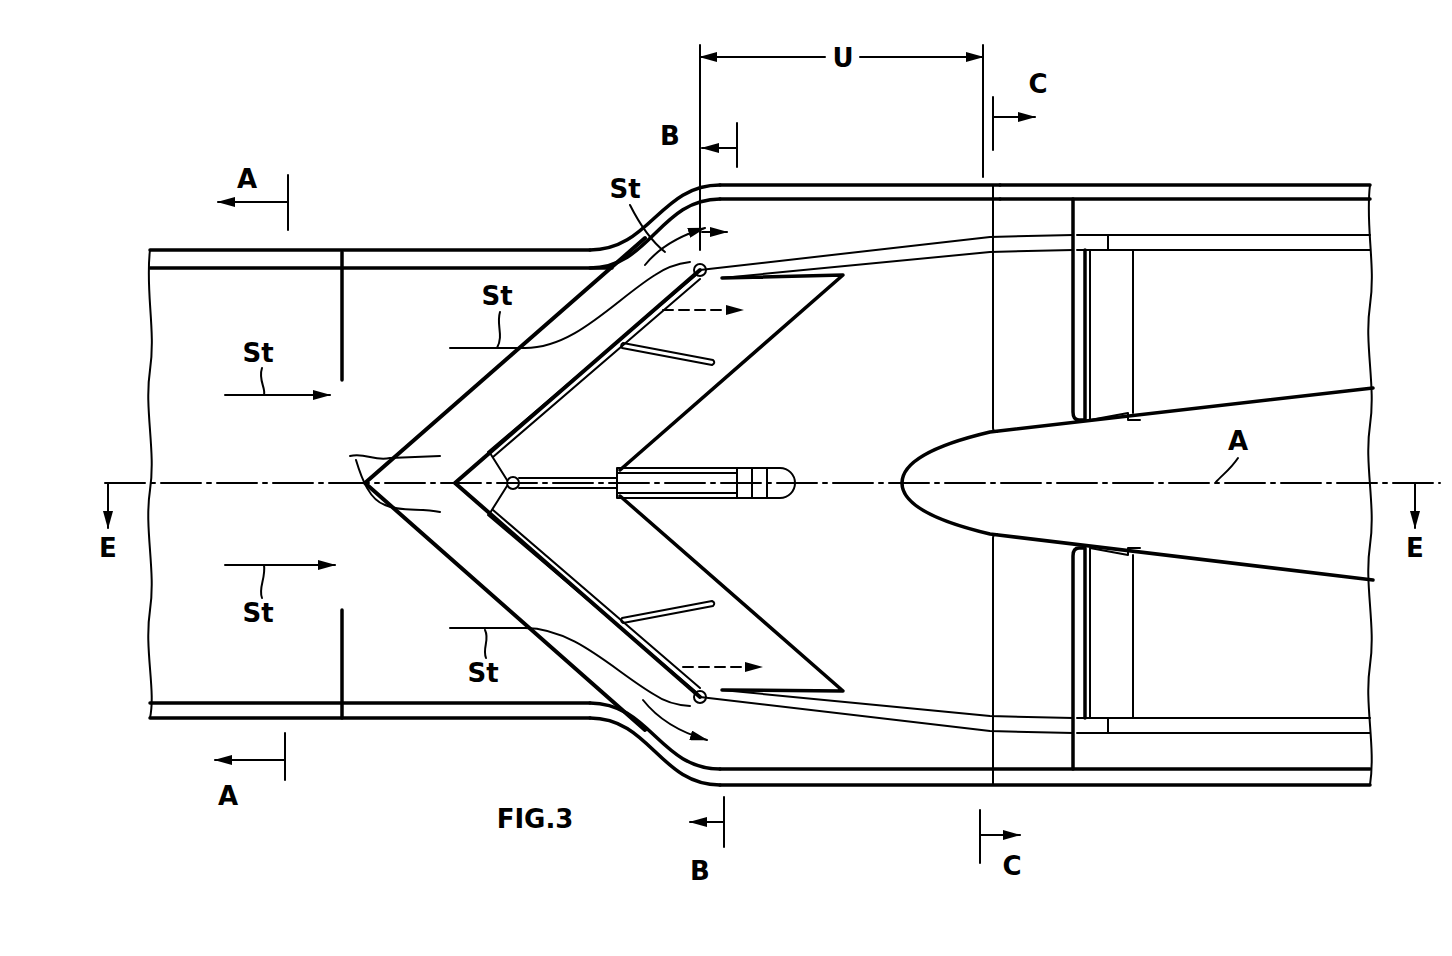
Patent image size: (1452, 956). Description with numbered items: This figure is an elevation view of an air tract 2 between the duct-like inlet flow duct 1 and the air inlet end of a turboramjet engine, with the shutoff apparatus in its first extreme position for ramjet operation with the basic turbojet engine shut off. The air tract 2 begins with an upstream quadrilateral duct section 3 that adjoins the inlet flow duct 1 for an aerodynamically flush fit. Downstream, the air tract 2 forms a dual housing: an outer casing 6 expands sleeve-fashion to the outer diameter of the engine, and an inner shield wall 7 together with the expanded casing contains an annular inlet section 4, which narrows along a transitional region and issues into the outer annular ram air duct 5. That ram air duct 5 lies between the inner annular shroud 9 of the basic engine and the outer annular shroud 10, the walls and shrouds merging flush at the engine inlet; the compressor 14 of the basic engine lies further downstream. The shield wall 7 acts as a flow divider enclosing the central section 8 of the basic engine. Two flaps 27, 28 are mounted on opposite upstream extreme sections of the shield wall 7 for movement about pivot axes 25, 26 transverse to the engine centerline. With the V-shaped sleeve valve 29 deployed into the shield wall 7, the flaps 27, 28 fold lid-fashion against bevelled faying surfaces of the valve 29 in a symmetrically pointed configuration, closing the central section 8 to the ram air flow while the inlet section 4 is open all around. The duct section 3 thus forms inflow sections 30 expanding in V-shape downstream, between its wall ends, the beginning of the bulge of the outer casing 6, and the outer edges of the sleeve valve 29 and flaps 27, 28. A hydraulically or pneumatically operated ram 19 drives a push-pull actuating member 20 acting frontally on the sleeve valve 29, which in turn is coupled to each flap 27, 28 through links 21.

The inlet flow duct 1 is at (222, 536).
The air tract 2 is at (535, 238).
The quadrilateral duct section 3 is at (407, 641).
The annular inlet section 4 is at (840, 238).
The annular ram air duct 5 is at (1223, 231).
The outer casing 6 is at (820, 195).
The shield wall 7 is at (893, 250).
The central section 8 is at (908, 606).
The inner annular shroud 9 is at (1310, 235).
The outer annular shroud 10 is at (1140, 186).
The compressor 14 is at (1263, 690).
The ram 19 is at (770, 460).
The actuating member 20 is at (600, 490).
The link 21 is at (720, 358).
The pivot axis 25 is at (706, 268).
The pivot axis 26 is at (703, 702).
The flap 27 is at (605, 362).
The flap 28 is at (605, 606).
The sleeve valve 29 is at (613, 437).
The inflow section 30 is at (510, 484).